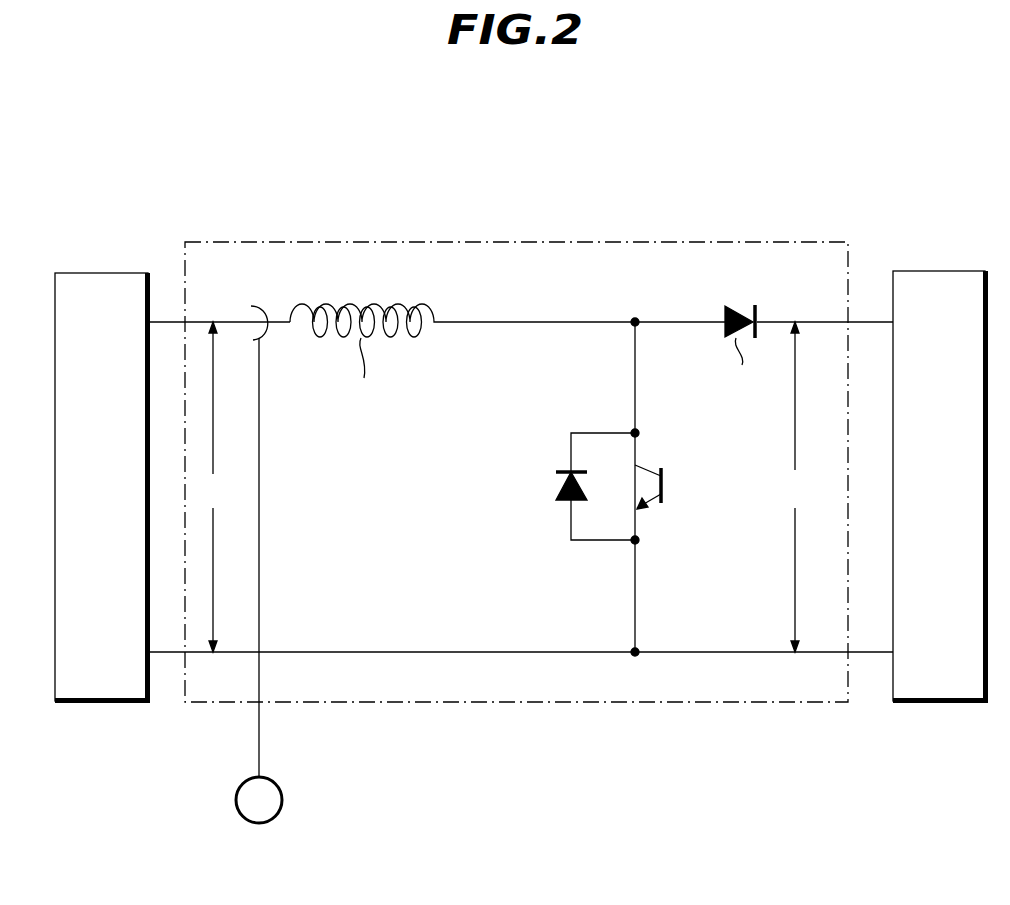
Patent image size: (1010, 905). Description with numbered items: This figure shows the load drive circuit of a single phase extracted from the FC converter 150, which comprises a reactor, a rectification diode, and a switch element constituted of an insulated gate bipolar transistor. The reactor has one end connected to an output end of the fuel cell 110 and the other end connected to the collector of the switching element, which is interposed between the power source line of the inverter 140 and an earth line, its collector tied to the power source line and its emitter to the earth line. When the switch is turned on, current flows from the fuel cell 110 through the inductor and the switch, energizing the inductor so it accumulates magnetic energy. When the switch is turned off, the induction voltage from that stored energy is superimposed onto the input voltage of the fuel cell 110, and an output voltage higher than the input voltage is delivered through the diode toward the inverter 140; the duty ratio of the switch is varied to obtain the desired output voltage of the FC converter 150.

The fuel cell 110 is at (120, 705).
The inverter 140 is at (963, 705).
The FC converter 150 is at (664, 194).